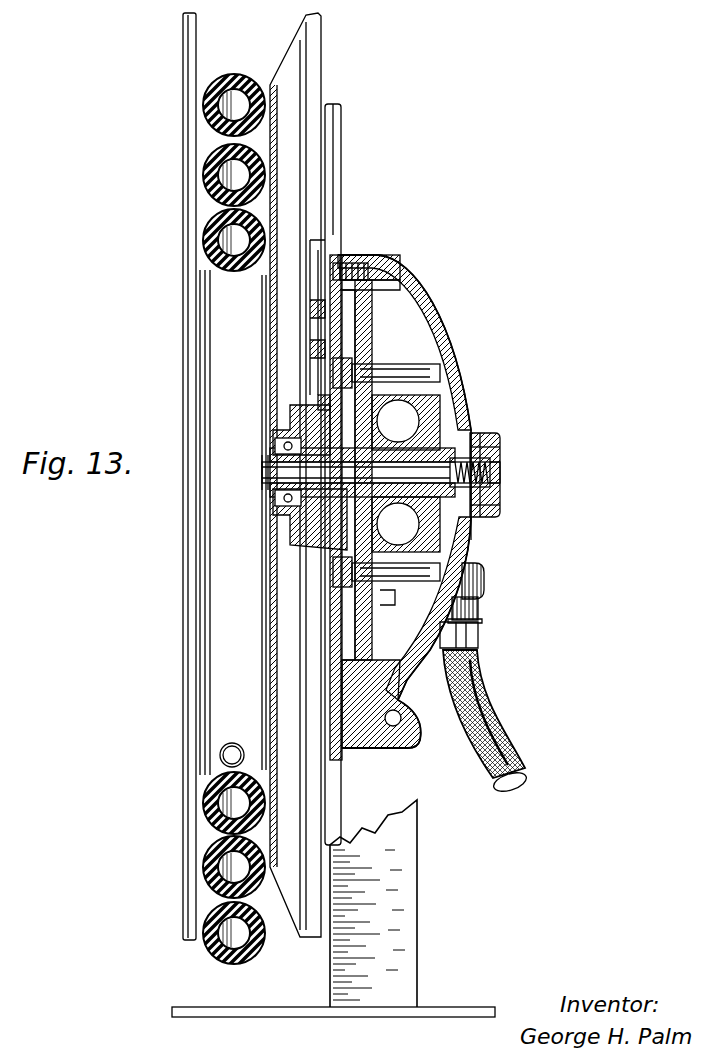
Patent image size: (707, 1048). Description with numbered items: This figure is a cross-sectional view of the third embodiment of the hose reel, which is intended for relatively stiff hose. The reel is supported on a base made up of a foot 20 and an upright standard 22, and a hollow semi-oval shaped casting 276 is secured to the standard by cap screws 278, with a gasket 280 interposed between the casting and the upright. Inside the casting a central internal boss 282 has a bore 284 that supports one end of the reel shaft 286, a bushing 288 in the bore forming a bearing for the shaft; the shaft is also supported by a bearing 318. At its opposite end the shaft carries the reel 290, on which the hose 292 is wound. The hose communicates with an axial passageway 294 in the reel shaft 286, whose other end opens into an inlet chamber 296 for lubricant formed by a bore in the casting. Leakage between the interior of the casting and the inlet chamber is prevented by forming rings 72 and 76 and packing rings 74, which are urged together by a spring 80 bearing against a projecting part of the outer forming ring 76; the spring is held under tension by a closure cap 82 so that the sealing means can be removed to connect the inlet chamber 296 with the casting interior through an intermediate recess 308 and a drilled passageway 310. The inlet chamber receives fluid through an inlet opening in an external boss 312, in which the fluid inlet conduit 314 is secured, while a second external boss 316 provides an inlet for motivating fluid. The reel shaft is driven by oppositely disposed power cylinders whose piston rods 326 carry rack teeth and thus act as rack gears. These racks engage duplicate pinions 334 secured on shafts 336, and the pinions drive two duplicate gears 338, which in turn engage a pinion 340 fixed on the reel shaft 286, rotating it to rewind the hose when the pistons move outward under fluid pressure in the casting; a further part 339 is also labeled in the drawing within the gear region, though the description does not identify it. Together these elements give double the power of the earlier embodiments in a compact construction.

The foot 20 is at (440, 1010).
The upright standard 22 is at (395, 898).
The forming ring 72 is at (451, 472).
The packing rings 74 is at (480, 420).
The outer forming ring 76 is at (500, 447).
The spring 80 is at (500, 462).
The closure cap 82 is at (500, 480).
The casting 276 is at (463, 378).
The cap screws 278 is at (325, 325).
The gasket 280 is at (352, 750).
The central internal boss 282 is at (406, 473).
The bore 284 is at (381, 471).
The reel shaft 286 is at (280, 462).
The bushing 288 is at (470, 410).
The reel 290 is at (290, 97).
The hose 292 is at (232, 78).
The axial passageway 294 is at (275, 477).
The inlet chamber 296 is at (498, 435).
The intermediate recess 308 is at (495, 517).
The drilled passageway 310 is at (478, 525).
The external boss 312 is at (480, 570).
The fluid inlet conduit 314 is at (515, 765).
The external boss 316 is at (482, 621).
The bearing 318 is at (300, 422).
The piston rods 326 is at (462, 376).
The pinions 334 is at (385, 350).
The shafts 336 is at (460, 380).
The gears 338 is at (370, 292).
The opening 339 is at (393, 592).
The pinion 340 is at (318, 405).